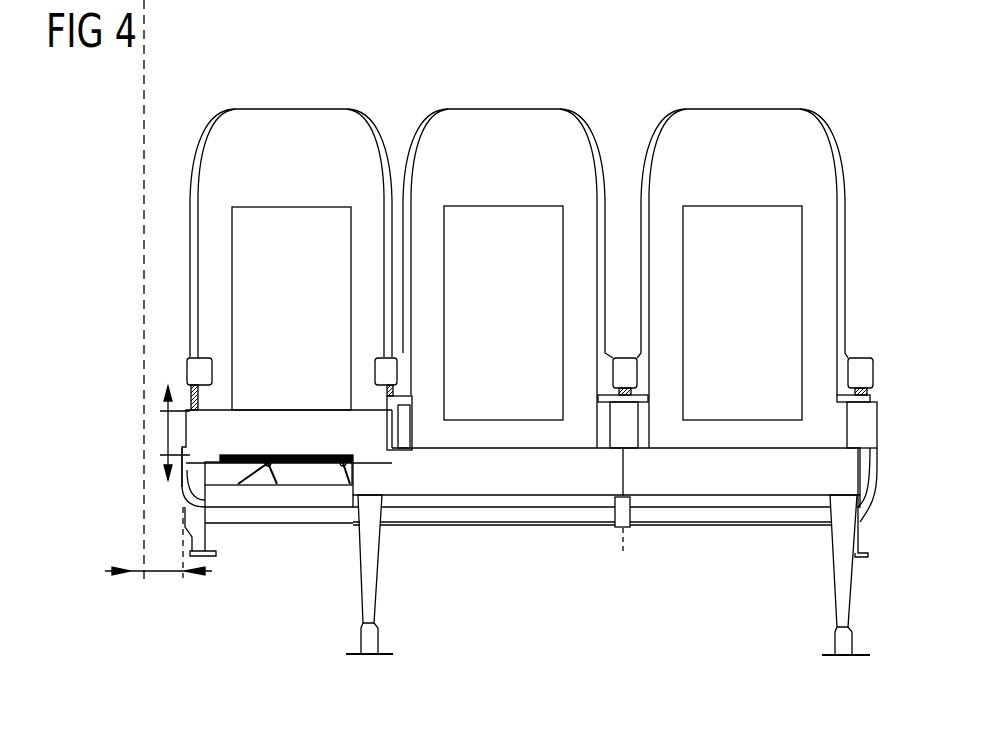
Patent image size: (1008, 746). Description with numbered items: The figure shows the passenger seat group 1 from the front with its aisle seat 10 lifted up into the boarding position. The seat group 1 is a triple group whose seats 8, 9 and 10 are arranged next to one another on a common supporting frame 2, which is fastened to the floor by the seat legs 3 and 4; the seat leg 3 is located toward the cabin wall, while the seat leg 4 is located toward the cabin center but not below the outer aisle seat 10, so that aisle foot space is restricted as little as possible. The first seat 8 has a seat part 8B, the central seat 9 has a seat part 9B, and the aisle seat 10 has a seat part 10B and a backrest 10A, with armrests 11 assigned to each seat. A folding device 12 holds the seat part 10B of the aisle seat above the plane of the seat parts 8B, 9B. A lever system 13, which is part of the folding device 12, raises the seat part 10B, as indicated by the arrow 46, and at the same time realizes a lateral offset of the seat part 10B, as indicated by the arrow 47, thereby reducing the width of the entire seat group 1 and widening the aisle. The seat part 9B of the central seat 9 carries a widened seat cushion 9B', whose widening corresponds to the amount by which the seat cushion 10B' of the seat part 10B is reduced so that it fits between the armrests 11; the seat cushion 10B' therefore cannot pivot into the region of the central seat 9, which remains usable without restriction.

The passenger seat group 1 is at (86, 126).
The supporting frame 2 is at (706, 558).
The seat leg 3 is at (843, 582).
The seat leg 4 is at (368, 578).
The seat 8 is at (754, 120).
The seat part 8B is at (737, 462).
The seat 9 is at (524, 120).
The seat part 9B is at (488, 418).
The widened seat cushion 9B' is at (490, 577).
The aisle seat 10 is at (292, 120).
The backrest 10A is at (286, 215).
The seat part 10B is at (287, 415).
The seat cushion 10B' is at (235, 397).
The armrests 11 is at (194, 371).
The folding device 12 is at (317, 478).
The lever system 13 is at (277, 484).
The arrow 46 is at (165, 434).
The arrow 47 is at (158, 573).